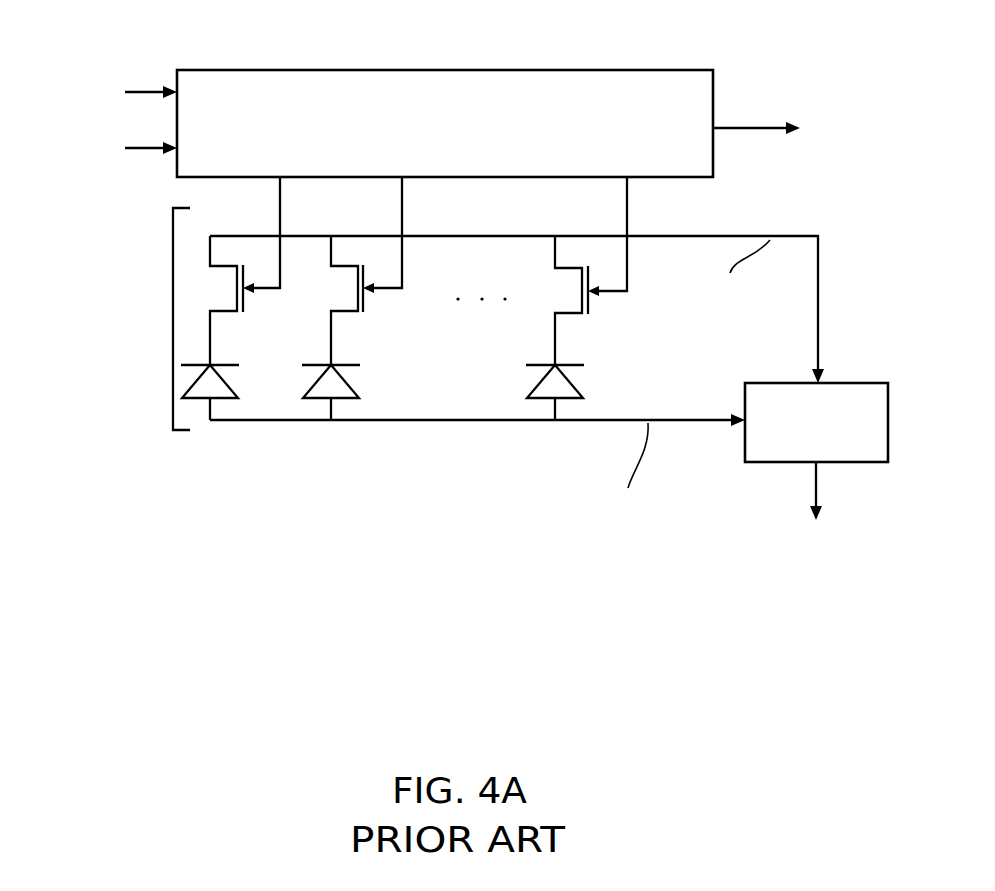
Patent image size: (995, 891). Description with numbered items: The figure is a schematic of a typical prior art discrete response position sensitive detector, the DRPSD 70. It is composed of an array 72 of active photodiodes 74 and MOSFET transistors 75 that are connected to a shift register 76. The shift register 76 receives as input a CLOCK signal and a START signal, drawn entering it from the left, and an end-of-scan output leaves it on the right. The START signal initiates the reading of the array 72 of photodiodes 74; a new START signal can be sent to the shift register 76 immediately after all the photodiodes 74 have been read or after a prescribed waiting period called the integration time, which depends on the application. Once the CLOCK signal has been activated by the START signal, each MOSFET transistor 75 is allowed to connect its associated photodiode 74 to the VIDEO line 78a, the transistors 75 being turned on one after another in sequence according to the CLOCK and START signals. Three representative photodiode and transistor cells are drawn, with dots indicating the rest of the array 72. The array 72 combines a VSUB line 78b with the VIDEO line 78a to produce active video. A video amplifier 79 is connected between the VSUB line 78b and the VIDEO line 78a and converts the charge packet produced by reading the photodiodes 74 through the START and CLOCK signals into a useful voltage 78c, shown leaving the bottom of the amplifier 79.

The DRPSD 70 is at (511, 590).
The array 72 is at (170, 320).
The active photodiode 74 is at (210, 422).
The MOSFET transistor 75 is at (246, 291).
The shift register 76 is at (445, 69).
The VIDEO line 78a is at (698, 236).
The VSUB line 78b is at (708, 419).
The voltage 78c is at (816, 486).
The video amplifier 79 is at (852, 383).